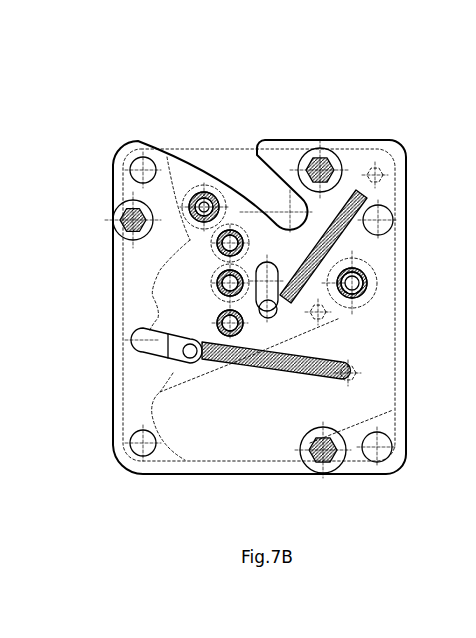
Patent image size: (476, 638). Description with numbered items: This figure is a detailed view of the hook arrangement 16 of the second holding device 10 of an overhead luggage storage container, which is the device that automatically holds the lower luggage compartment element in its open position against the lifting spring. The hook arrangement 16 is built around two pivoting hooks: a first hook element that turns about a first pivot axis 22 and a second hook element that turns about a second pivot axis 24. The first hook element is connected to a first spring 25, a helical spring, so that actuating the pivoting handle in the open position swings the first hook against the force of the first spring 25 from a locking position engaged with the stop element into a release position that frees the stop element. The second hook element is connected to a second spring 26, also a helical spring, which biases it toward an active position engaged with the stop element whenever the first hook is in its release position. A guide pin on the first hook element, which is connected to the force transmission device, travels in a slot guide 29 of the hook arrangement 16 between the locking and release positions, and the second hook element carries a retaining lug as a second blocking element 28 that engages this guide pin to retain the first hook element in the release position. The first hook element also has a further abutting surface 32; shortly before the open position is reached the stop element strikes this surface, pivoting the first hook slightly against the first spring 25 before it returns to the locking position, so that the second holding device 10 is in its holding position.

The second holding device 10 is at (120, 125).
The hook arrangement 16 is at (415, 270).
The first pivot axis 22 is at (207, 194).
The second pivot axis 24 is at (352, 283).
The first spring 25 is at (268, 362).
The second spring 26 is at (350, 196).
The second blocking element 28 is at (160, 402).
The slot guide 29 is at (147, 352).
The further abutting surface 32 is at (253, 202).